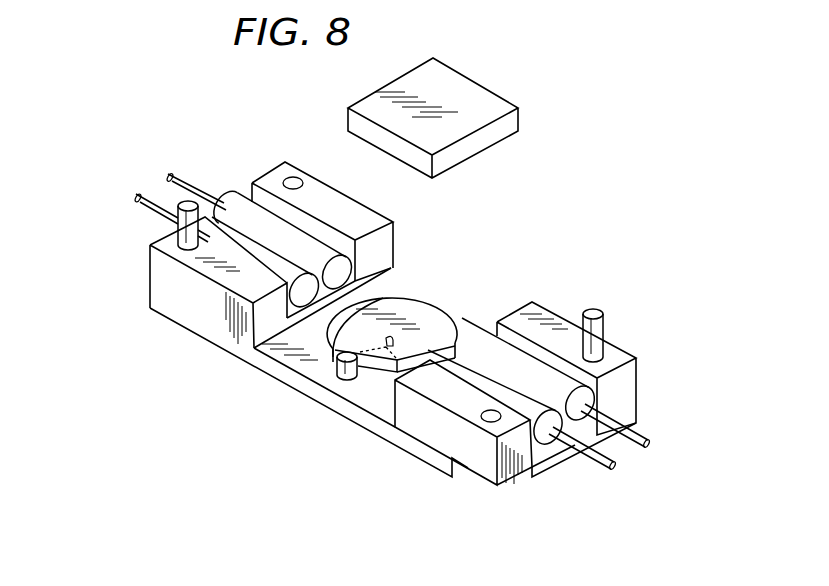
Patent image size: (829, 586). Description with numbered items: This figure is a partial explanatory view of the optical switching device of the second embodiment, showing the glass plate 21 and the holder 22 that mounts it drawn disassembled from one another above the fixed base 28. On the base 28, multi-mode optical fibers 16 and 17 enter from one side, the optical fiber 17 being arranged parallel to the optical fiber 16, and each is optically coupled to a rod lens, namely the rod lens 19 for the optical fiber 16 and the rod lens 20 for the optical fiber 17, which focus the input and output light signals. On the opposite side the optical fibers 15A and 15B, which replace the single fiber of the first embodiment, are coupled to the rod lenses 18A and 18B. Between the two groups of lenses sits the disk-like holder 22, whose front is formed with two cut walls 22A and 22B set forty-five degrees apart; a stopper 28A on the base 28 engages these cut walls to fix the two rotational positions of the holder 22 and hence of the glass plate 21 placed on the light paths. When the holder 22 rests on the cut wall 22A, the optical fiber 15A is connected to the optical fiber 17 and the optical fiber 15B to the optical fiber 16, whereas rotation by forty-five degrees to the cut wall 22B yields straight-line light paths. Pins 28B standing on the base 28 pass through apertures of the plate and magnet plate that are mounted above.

The optical fiber 15A is at (652, 452).
The optical fiber 15B is at (584, 458).
The optical fiber 16 is at (177, 178).
The optical fiber 17 is at (133, 205).
The rod lens 18A is at (492, 363).
The rod lens 18B is at (622, 356).
The rod lens 19 is at (300, 235).
The rod lens 20 is at (257, 255).
The glass plate 21 is at (480, 92).
The holder 22 is at (330, 353).
The cut wall 22A is at (388, 334).
The cut wall 22B is at (405, 350).
The base 28 is at (430, 455).
The stopper 28A is at (345, 380).
The pins 28B is at (180, 247).